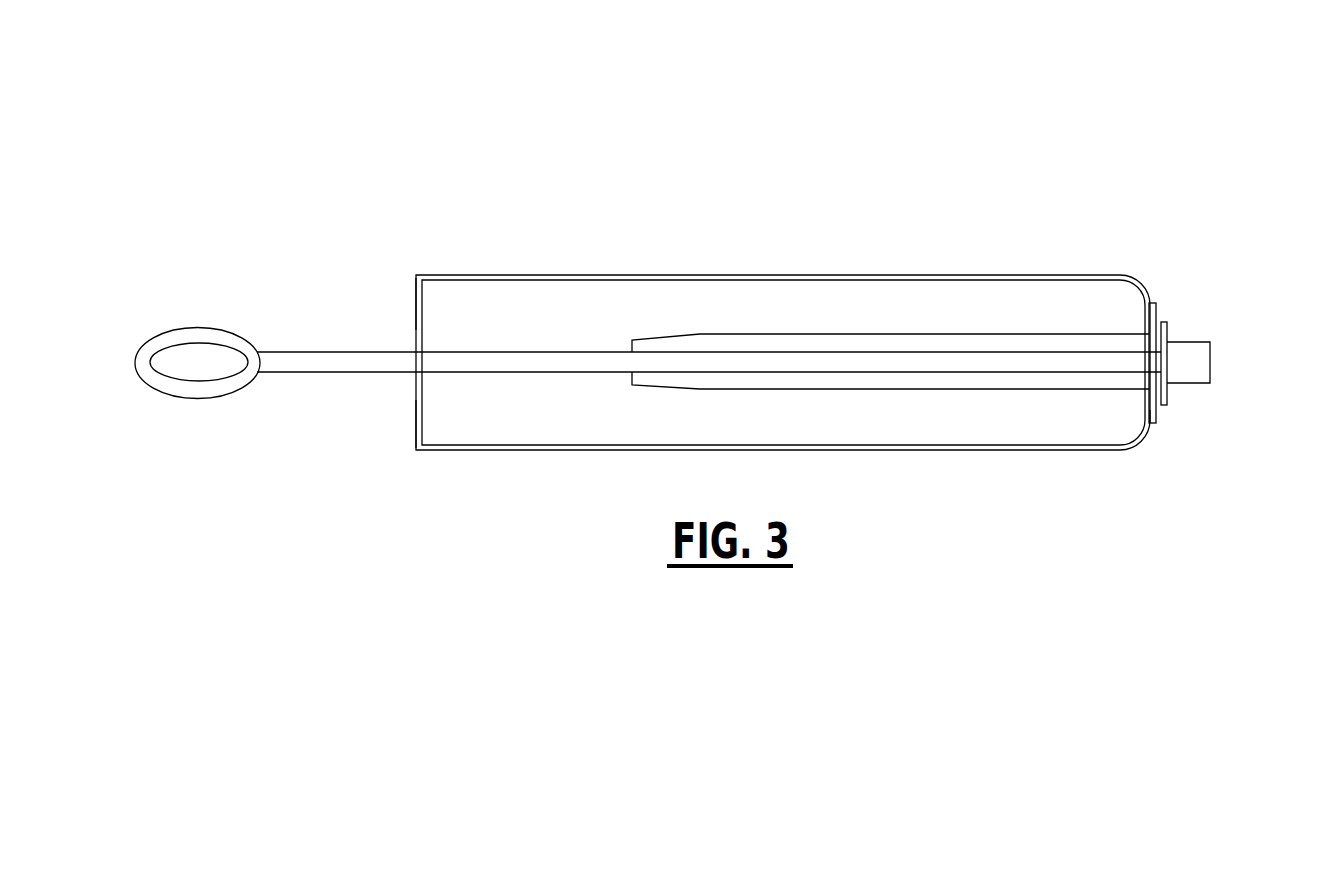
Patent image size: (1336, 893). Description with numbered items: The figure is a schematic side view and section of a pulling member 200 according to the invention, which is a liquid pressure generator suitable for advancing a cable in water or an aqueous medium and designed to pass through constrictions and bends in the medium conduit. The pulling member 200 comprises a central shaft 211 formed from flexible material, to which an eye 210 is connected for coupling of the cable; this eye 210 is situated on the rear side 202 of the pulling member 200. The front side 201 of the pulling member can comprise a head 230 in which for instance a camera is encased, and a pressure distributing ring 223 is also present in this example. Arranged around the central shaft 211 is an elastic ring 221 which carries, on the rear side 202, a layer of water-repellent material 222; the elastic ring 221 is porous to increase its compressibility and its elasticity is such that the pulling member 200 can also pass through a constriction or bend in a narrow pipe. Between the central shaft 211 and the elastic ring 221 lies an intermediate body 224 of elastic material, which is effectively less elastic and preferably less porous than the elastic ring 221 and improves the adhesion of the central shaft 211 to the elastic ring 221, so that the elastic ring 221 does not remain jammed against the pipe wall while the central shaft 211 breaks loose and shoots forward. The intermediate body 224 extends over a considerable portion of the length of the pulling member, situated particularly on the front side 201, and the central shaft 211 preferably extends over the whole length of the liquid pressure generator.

The pulling member 200 is at (372, 130).
The front side 201 is at (1158, 415).
The rear side 202 is at (415, 312).
The eye 210 is at (197, 390).
The central shaft 211 is at (530, 360).
The elastic ring 221 is at (957, 275).
The layer of water-repellent material 222 is at (415, 417).
The pressure distributing ring 223 is at (1158, 307).
The intermediate body 224 is at (1012, 380).
The head 230 is at (1192, 358).